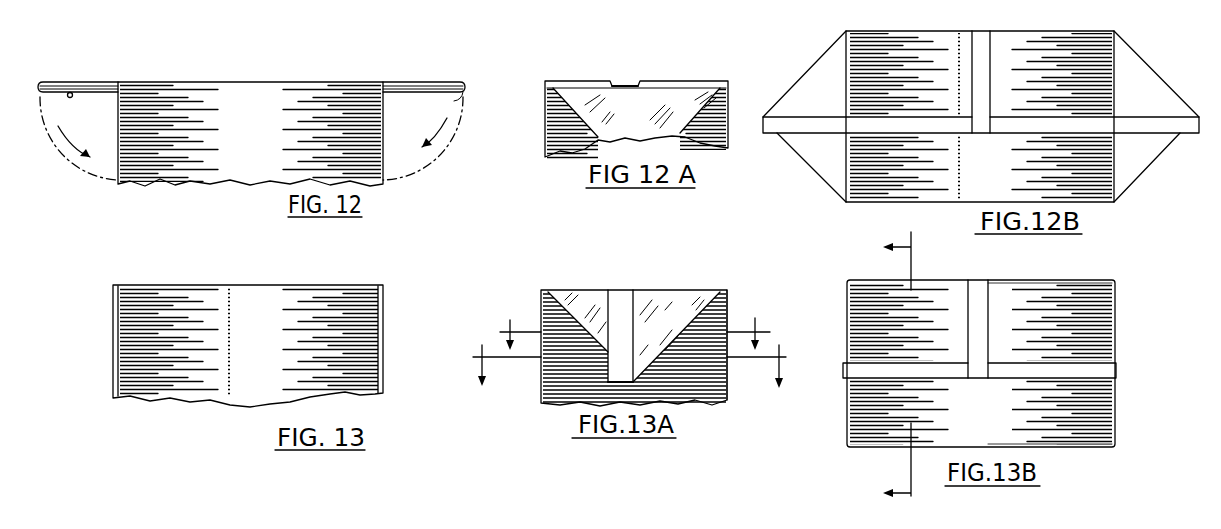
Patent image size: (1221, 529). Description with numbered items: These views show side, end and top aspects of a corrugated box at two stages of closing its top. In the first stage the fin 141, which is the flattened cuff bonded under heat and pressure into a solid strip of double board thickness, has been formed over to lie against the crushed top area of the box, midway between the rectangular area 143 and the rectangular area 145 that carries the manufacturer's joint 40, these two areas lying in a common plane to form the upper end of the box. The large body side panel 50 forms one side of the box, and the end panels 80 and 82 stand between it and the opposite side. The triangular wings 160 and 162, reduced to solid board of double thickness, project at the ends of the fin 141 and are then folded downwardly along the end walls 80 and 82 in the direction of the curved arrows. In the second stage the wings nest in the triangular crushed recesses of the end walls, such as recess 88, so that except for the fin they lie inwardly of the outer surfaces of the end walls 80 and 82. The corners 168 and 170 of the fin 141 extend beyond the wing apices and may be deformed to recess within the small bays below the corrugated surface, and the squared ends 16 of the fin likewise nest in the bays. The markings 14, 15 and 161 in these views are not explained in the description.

In FIG. 12B, the joint 40 is at (981, 31).
In FIG. 13B, the joint 40 is at (982, 290).
In FIG. 12, the body side panel 50 is at (233, 176).
In FIG. 13, the body side panel 50 is at (201, 388).
In FIG. 13A, the body side panel 50 is at (541, 383).
In FIG. 13B, the body side panel 50 is at (1100, 444).
In FIG. 12, the end panel 80 is at (118, 183).
In FIG. 12, the end panel 82 is at (383, 148).
In FIG. 12A, the end panel 82 is at (560, 132).
In FIG. 13A, the end panel 82 is at (706, 385).
In FIG. 12A, the triangular crushed area 88 is at (646, 129).
In FIG. 13A, the triangular crushed area 88 is at (678, 335).
In FIG. 12, the fin 141 is at (54, 81).
In FIG. 12A, the fin 141 is at (630, 82).
In FIG. 12B, the fin 141 is at (806, 128).
In FIG. 13, the fin 141 is at (111, 340).
In FIG. 13A, the fin 141 is at (621, 298).
In FIG. 13B, the fin 141 is at (846, 380).
In FIG. 13B, the rectangular area 143 is at (1060, 435).
In FIG. 13B, the rectangular area 145 is at (1048, 305).
In FIG. 12, the triangular wing 160 is at (72, 92).
In FIG. 12B, the triangular wing 160 is at (810, 82).
In FIG. 13A, the slot bottom 161 is at (616, 376).
In FIG. 12, the triangular wing 162 is at (465, 94).
In FIG. 12B, the triangular wing 162 is at (1140, 73).
In FIG. 13A, the triangular wing 162 is at (653, 312).
In FIG. 12B, the corner of the fin 168 is at (764, 134).
In FIG. 12B, the corner of the fin 170 is at (1199, 135).
In FIG. 13B, the section line 14- 14 is at (897, 372).
In FIG. 13A, the section line 15- 15 is at (632, 329).
In FIG. 13A, the squared ends 16 is at (630, 361).